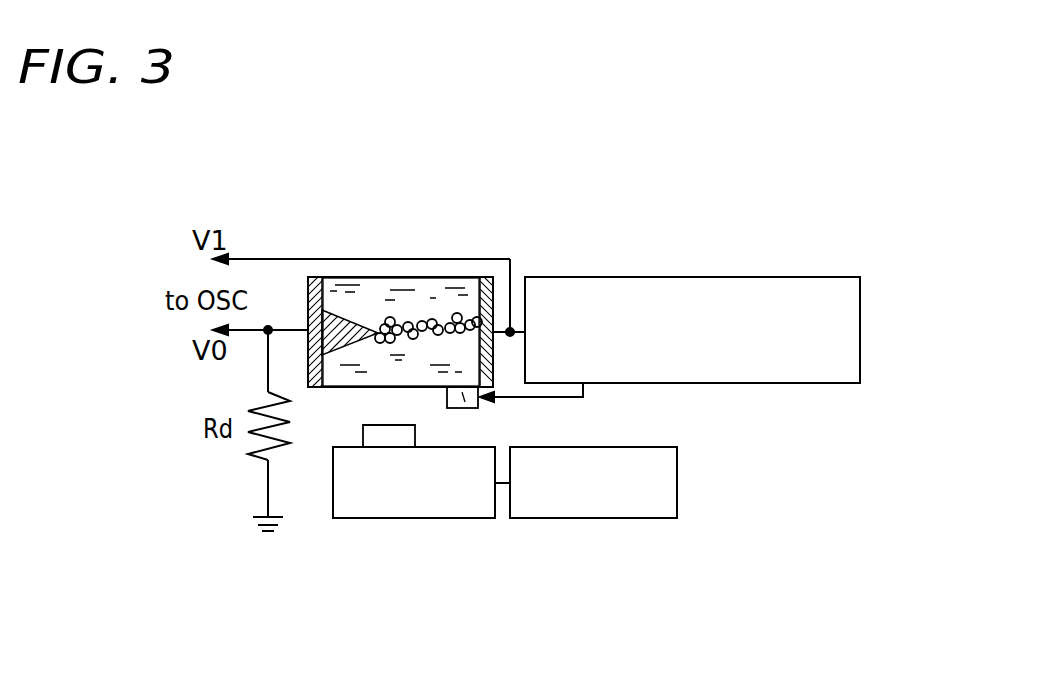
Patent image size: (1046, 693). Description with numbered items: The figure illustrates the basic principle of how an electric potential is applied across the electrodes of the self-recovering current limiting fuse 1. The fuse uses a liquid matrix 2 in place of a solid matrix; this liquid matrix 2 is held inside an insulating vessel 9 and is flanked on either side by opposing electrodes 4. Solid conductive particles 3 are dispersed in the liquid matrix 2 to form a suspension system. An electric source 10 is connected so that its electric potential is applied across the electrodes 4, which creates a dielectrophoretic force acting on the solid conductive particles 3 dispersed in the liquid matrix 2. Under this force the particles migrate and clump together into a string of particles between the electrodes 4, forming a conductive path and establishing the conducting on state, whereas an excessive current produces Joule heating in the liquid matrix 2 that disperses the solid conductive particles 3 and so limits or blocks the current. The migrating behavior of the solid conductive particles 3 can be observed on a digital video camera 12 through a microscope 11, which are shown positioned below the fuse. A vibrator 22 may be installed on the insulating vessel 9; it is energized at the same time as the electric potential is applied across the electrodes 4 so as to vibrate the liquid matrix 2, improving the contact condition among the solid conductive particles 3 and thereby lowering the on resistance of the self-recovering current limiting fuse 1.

The self-recovering current limiting fuse 1 is at (476, 274).
The liquid matrix 2 is at (449, 300).
The solid conductive particles 3 is at (391, 319).
The electrodes 4 is at (313, 302).
The insulating vessel 9 is at (348, 277).
The electric source 10 is at (845, 285).
The microscope 11 is at (384, 505).
The digital video camera 12 is at (636, 505).
The vibrator 22 is at (466, 408).